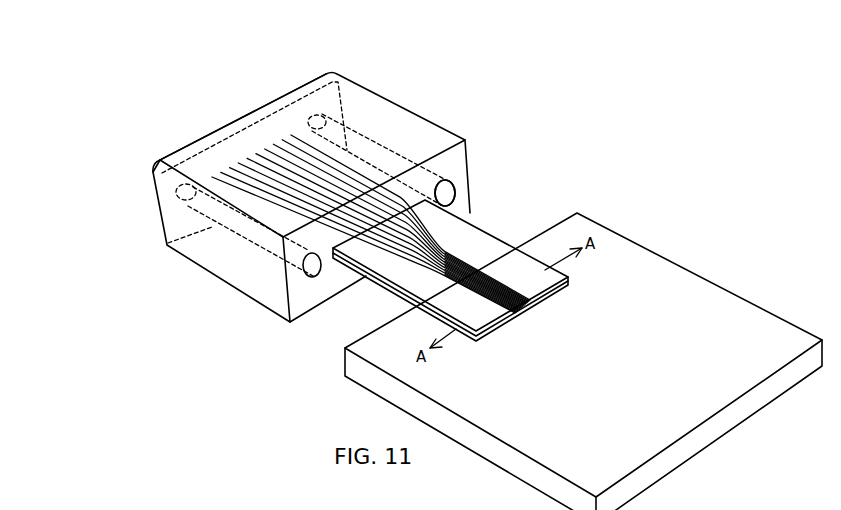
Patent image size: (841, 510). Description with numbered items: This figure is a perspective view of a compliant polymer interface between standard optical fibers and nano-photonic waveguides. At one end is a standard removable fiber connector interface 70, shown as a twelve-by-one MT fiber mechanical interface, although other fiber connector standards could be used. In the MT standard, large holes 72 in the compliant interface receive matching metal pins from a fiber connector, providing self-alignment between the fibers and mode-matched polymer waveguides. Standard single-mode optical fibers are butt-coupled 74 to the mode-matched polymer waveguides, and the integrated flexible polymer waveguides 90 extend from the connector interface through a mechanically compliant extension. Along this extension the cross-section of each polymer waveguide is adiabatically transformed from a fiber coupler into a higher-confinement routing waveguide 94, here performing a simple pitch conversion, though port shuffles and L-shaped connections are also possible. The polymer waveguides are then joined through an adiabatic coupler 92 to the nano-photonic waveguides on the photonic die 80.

The fiber connector interface 70 is at (437, 100).
The large holes 72 is at (448, 193).
The butt-coupled 74 is at (242, 118).
The nano-photonic die 80 is at (686, 268).
The flexible polymer waveguides 90 is at (487, 284).
The adiabatic coupler 92 is at (490, 258).
The routing waveguide 94 is at (364, 273).